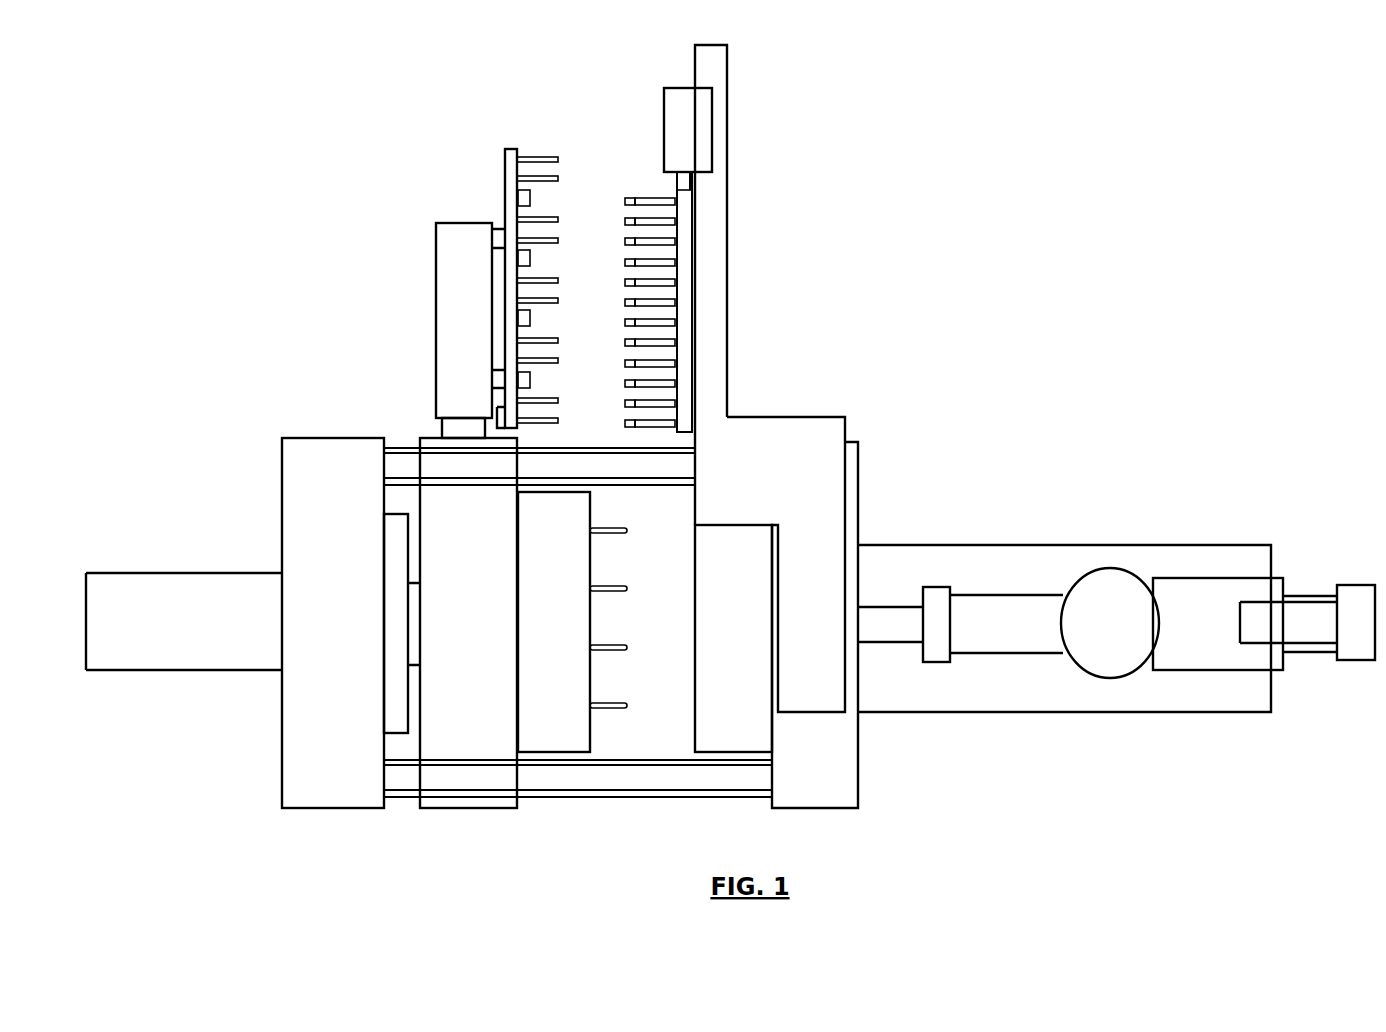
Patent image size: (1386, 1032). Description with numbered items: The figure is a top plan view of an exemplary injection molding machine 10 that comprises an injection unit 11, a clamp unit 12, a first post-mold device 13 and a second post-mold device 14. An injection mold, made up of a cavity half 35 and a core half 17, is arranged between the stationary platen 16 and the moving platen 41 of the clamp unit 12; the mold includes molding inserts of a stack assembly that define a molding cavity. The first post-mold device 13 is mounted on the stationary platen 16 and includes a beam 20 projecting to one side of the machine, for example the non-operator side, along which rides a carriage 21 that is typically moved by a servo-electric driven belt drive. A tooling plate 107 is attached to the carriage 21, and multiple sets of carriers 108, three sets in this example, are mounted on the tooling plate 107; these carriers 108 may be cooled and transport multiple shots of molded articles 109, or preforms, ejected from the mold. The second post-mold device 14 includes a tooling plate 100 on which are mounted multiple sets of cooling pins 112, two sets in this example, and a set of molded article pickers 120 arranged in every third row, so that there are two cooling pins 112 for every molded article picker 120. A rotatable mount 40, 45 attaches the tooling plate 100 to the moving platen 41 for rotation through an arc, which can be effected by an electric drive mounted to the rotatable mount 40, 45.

The injection molding machine 10 is at (800, 360).
The injection unit 11 is at (1013, 525).
The clamp unit 12 is at (257, 730).
The first post-mold device 13 is at (750, 125).
The second post-mold device 14 is at (425, 182).
The stationary platen 16 is at (792, 612).
The core half 17 is at (572, 622).
The beam 20 is at (720, 220).
The carriage 21 is at (700, 103).
The cavity half 35 is at (733, 638).
The rotatable mount 40 is at (445, 427).
The moving platen 41 is at (468, 623).
The rotatable mount 45 is at (450, 300).
The tooling plate 100 is at (505, 157).
The tooling plate 107 is at (685, 268).
The carriers 108 is at (668, 197).
The molded articles 109 is at (635, 193).
The cooling pins 112 is at (540, 157).
The molded article pickers 120 is at (522, 253).